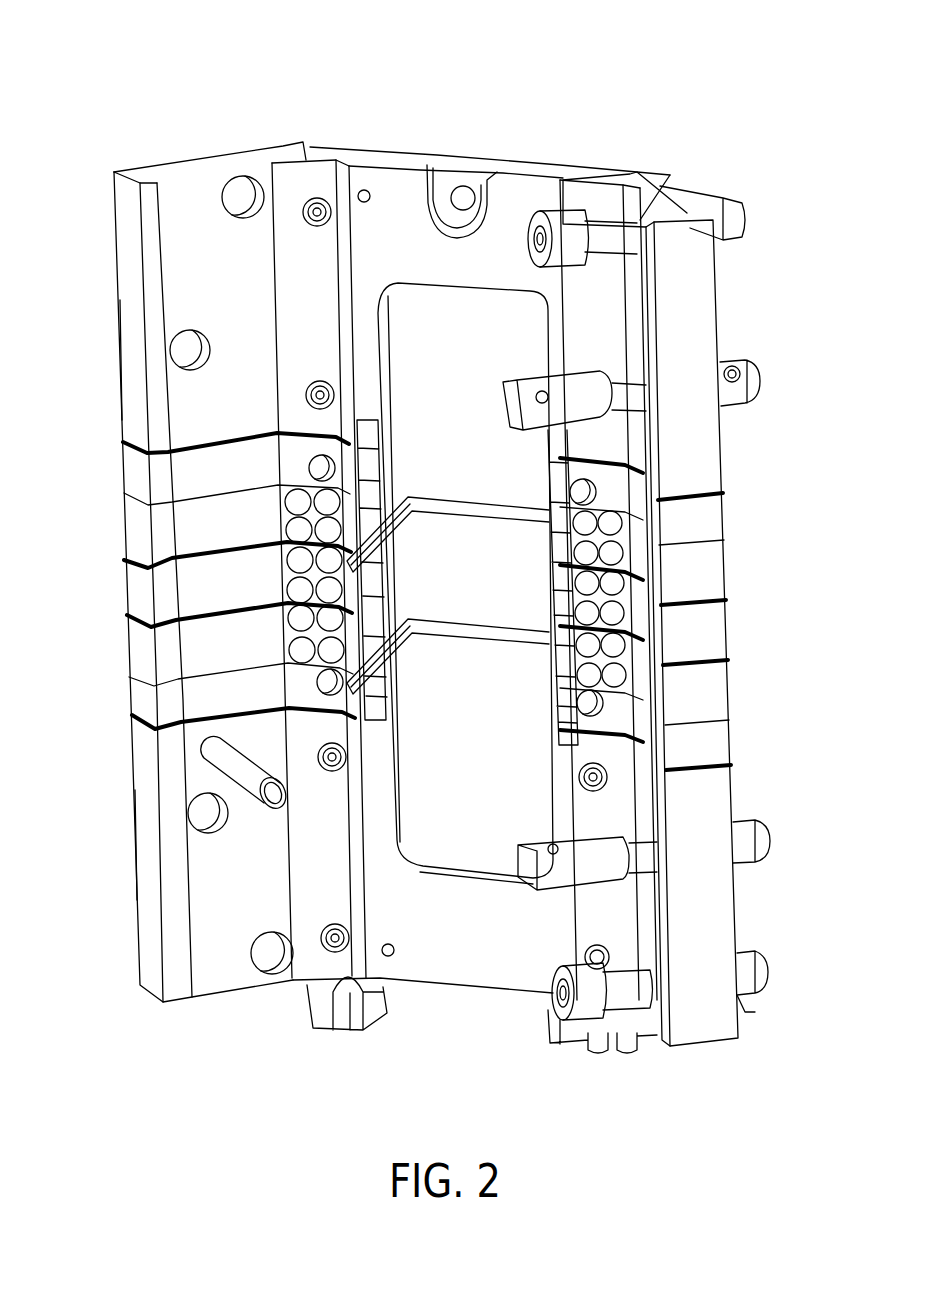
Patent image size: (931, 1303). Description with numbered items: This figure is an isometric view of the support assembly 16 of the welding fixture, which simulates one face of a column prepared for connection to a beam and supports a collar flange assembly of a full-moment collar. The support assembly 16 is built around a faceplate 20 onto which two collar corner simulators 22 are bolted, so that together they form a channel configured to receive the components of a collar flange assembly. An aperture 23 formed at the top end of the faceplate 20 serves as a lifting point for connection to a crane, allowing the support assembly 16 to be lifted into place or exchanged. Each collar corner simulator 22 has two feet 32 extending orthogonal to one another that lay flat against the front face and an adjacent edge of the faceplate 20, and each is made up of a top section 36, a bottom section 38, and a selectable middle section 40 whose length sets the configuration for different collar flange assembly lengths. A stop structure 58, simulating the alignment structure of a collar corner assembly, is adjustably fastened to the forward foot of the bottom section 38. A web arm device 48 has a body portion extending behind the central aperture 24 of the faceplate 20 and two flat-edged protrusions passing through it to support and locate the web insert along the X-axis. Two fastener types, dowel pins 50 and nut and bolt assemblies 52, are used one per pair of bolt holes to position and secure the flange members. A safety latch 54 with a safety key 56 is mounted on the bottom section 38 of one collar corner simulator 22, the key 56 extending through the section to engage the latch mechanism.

The support assembly 16 is at (166, 89).
The faceplate 20 is at (461, 868).
The collar corner simulator 22 is at (113, 188).
The aperture 23 is at (467, 195).
The central aperture 24 is at (413, 300).
The feet 32 is at (309, 163).
The top section 36 is at (116, 318).
The bottom section 38 is at (136, 829).
The middle section 40 is at (128, 467).
The web arm device 48 is at (490, 641).
The dowel pin 50 is at (757, 384).
The nut and bolt assembly 52 is at (742, 216).
The safety latch 54 is at (100, 690).
The safety key 56 is at (216, 753).
The stop structure 58 is at (312, 1004).